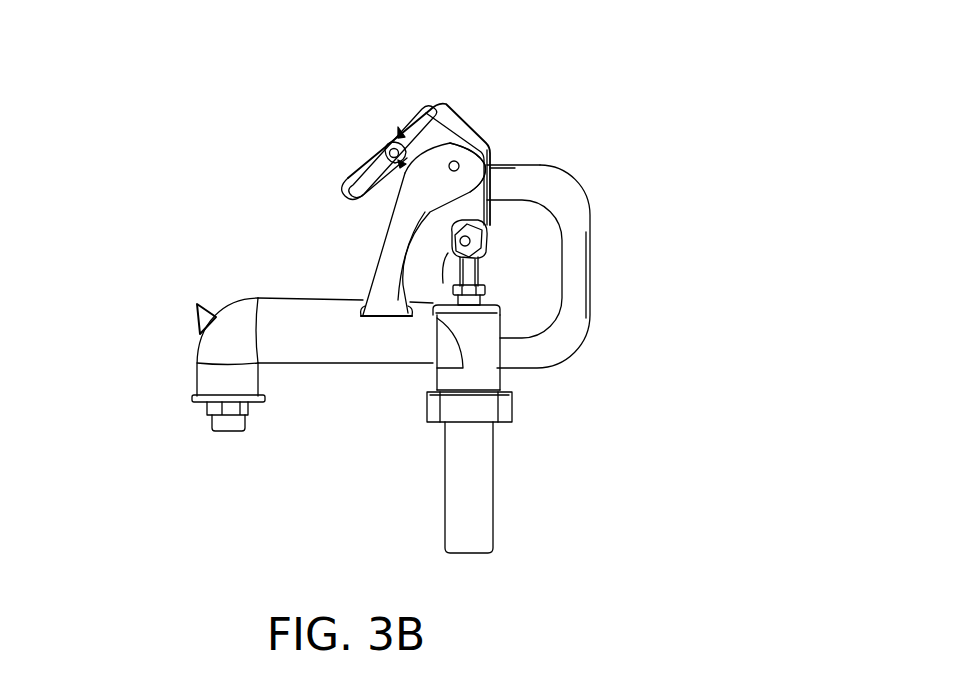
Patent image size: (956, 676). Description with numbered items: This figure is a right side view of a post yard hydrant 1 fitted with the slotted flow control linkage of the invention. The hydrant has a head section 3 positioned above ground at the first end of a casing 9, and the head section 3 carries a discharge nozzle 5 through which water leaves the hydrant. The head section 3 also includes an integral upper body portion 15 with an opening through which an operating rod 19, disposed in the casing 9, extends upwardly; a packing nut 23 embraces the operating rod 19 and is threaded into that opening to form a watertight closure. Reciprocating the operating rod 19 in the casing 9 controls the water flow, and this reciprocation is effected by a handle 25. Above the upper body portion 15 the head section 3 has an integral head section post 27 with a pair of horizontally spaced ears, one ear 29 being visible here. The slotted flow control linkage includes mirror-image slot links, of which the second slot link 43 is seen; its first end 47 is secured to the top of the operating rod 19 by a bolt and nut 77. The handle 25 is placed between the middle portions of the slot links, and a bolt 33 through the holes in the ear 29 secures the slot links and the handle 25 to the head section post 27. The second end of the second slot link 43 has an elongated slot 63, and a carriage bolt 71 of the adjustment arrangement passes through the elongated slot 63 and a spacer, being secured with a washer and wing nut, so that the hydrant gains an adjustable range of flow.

The post yard hydrant 1 is at (208, 238).
The head section 3 is at (340, 347).
The discharge nozzle 5 is at (193, 397).
The casing 9 is at (468, 455).
The upper body portion 15 is at (483, 335).
The operating rod 19 is at (470, 268).
The packing nut 23 is at (503, 313).
The handle 25 is at (573, 278).
The head section post 27 is at (417, 183).
The ear 29 is at (487, 165).
The bolt 33 is at (468, 173).
The second slot link 43 is at (457, 162).
The first end 47 is at (448, 255).
The elongated slot 63 is at (425, 112).
The carriage bolt 71 is at (390, 148).
The nut 77 is at (482, 230).